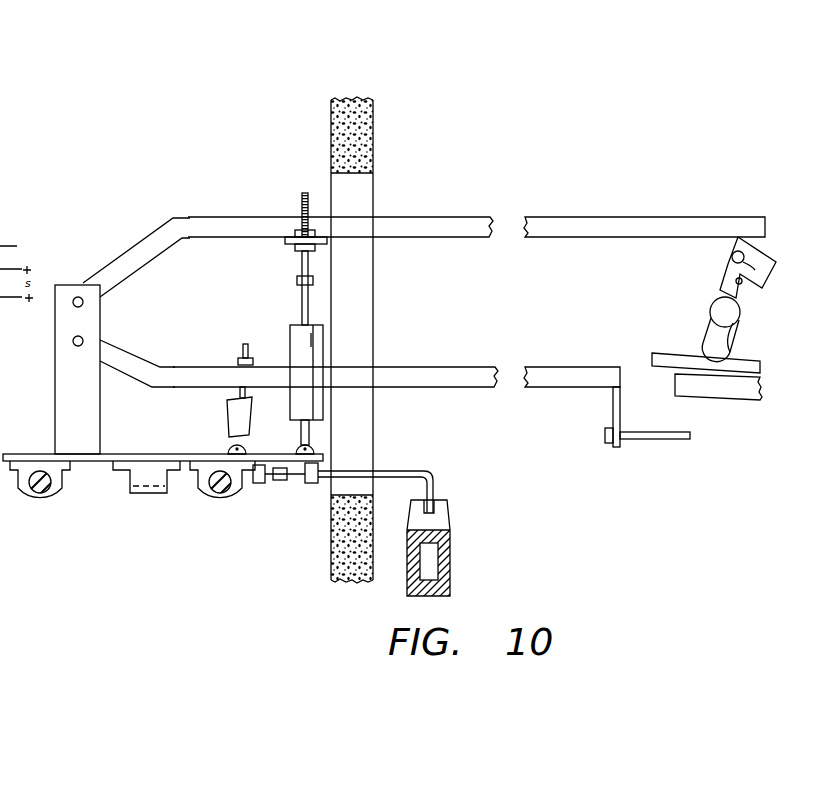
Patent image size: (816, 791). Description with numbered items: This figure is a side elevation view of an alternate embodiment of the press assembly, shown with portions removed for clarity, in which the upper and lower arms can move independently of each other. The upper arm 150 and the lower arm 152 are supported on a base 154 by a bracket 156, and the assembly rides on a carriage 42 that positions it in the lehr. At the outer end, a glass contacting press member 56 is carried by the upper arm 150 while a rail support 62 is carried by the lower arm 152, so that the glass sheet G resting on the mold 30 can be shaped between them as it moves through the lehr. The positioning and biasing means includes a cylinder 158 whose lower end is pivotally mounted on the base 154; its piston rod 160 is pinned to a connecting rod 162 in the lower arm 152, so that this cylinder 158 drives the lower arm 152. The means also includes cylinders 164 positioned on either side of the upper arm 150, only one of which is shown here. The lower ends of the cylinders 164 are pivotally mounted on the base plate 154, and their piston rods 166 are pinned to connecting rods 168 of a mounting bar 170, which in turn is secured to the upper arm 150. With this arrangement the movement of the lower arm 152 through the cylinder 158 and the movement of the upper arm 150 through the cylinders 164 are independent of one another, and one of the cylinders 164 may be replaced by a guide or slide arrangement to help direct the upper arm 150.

The gutter 30 is at (730, 400).
The glass sheet G is at (742, 357).
The carriage 42 is at (452, 553).
The glass contacting press member 56 is at (710, 323).
The rail support 62 is at (655, 440).
The upper arm 150 is at (438, 216).
The lower arm 152 is at (430, 366).
The base 154 is at (137, 452).
The bracket 156 is at (55, 405).
The cylinder 158 is at (228, 414).
The piston rod 160 is at (230, 394).
The connecting rod 162 is at (240, 357).
The cylinder 164 is at (290, 337).
The piston rod 166 is at (302, 298).
The connecting rod 168 is at (302, 200).
The mounting bar 170 is at (283, 242).